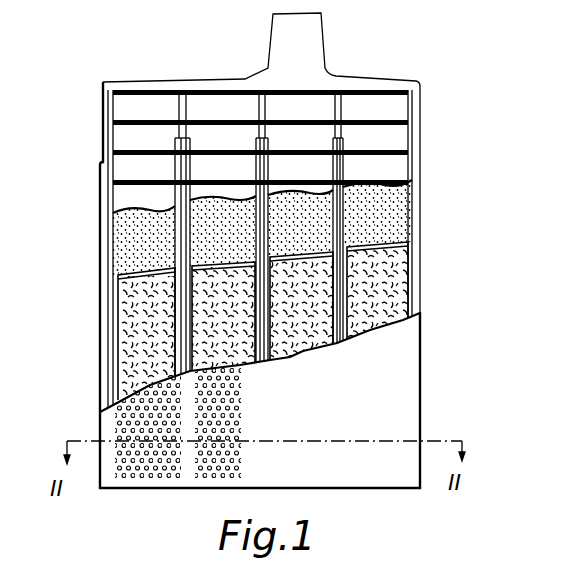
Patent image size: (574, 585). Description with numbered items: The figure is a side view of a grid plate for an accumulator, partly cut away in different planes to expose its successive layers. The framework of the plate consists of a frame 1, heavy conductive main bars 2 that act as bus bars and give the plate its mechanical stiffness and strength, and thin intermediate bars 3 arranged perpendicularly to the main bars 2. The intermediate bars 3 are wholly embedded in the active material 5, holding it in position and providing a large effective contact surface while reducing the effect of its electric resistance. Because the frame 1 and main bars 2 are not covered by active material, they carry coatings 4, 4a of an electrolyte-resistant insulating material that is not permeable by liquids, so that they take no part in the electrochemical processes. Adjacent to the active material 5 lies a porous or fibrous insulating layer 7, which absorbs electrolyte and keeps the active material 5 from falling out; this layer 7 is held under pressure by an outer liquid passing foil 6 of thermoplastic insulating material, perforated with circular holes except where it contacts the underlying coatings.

The frame 1 is at (108, 100).
The main bars 2 is at (181, 92).
The intermediate bars 3 is at (127, 118).
The coating 4 is at (105, 175).
The coating 4a is at (185, 170).
The active material 5 is at (128, 238).
The outer liquid passing foil 6 is at (108, 415).
The layer 7 is at (127, 312).